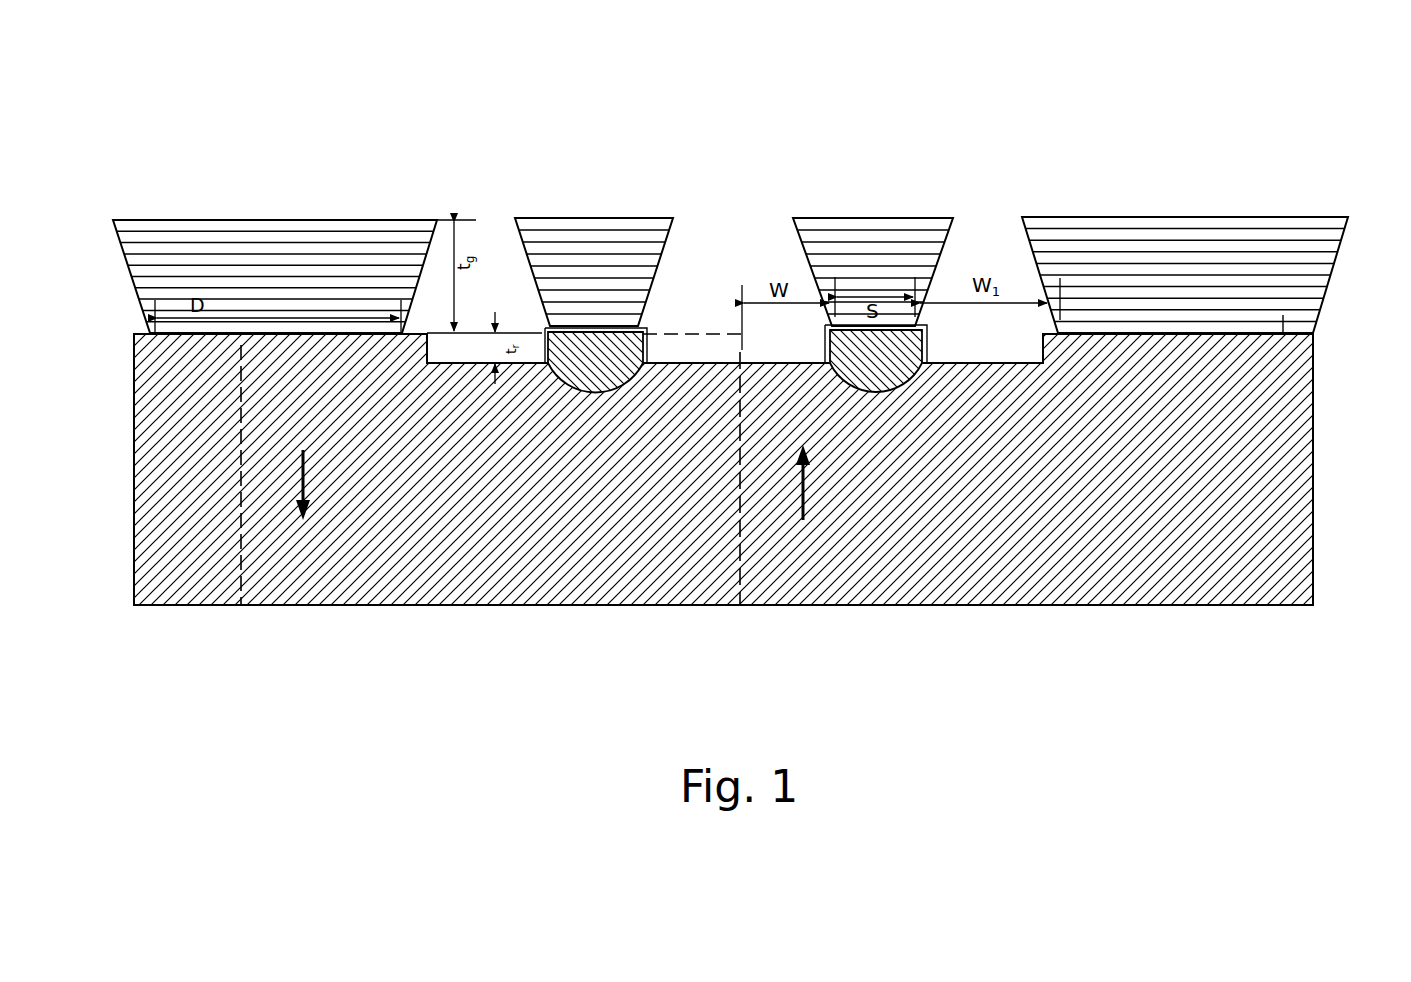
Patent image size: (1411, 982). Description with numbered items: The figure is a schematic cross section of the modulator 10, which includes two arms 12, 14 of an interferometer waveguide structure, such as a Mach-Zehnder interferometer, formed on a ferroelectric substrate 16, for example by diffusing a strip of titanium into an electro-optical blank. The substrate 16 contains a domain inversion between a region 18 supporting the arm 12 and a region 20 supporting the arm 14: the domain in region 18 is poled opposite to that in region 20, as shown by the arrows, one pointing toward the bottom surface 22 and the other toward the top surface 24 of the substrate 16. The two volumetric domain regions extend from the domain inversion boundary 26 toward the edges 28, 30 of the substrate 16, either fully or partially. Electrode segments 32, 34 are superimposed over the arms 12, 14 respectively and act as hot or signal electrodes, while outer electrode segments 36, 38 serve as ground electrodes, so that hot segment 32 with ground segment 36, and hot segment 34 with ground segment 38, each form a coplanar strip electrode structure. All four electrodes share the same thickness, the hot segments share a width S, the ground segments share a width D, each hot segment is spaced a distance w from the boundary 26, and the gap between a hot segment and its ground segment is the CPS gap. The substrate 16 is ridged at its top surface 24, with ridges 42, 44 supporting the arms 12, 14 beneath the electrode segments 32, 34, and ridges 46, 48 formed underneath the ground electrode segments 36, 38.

The modulator 10 is at (1016, 143).
The arm 12 is at (636, 390).
The arm 14 is at (905, 408).
The substrate 16 is at (1283, 478).
The region 18 is at (350, 572).
The region 20 is at (1000, 552).
The bottom surface 22 is at (480, 605).
The top surface 24 is at (1283, 320).
The domain inversion boundary 26 is at (730, 600).
The edge 28 is at (134, 490).
The edge 30 is at (1313, 492).
The electrode segment 32 is at (567, 218).
The electrode segment 34 is at (805, 218).
The electrode segment 36 is at (179, 219).
The electrode segment 38 is at (1108, 217).
The ridge 42 is at (546, 330).
The ridge 44 is at (824, 343).
The ridge 46 is at (134, 353).
The ridge 48 is at (1313, 350).